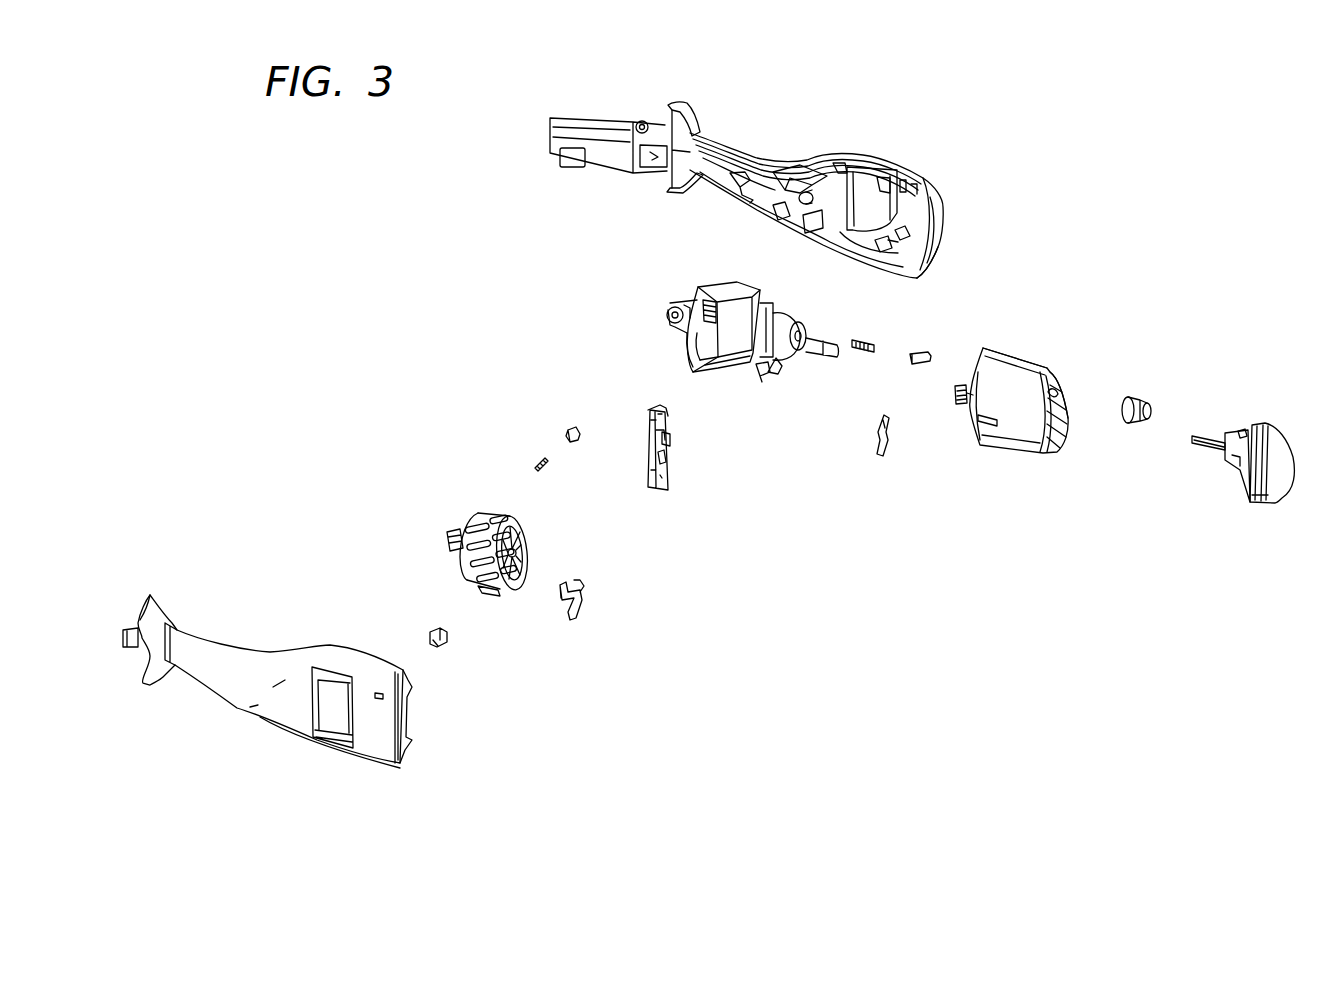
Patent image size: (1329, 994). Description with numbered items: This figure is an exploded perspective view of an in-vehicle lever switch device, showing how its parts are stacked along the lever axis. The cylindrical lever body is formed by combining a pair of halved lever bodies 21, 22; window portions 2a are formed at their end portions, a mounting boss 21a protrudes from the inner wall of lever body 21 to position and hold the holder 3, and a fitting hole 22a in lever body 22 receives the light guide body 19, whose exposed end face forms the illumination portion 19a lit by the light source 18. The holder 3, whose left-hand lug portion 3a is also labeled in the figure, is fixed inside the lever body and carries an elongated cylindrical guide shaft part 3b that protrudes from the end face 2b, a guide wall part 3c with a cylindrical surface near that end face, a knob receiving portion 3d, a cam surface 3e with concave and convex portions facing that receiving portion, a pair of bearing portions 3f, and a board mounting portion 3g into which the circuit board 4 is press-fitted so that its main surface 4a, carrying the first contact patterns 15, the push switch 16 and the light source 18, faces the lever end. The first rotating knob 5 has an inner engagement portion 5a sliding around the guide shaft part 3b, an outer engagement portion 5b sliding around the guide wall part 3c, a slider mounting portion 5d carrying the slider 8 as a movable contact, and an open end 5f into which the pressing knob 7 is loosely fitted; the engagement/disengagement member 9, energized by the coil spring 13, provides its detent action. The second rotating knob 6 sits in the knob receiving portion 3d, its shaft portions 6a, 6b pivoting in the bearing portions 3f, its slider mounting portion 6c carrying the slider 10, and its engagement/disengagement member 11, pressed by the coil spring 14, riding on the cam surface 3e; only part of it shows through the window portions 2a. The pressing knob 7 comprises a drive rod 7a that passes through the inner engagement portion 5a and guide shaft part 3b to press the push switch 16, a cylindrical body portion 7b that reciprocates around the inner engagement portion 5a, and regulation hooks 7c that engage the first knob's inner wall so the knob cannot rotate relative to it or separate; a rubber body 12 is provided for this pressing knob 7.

The halved lever body 21 is at (728, 142).
The mounting boss 21a is at (795, 162).
The window portion 2a is at (860, 178).
The end face 2b is at (932, 192).
The holder 3 is at (745, 283).
The motor mounting lug 3a is at (667, 312).
The guide shaft part 3b is at (826, 358).
The guide wall part 3c is at (782, 366).
The knob receiving portion 3d is at (730, 360).
The cam surface 3e is at (703, 300).
The bearing portion 3f is at (688, 335).
The board mounting portion 3g is at (760, 380).
The circuit board 4 is at (660, 488).
The main surface 4a is at (652, 436).
The first rotating knob 5 is at (1030, 456).
The inner engagement portion 5a is at (1054, 380).
The outer engagement portion 5b is at (977, 422).
The slider mounting portion 5d is at (958, 405).
The open end 5f is at (1058, 428).
The second rotating knob 6 is at (484, 512).
The shaft portion 6a is at (448, 534).
The shaft portion 6b is at (526, 552).
The slider mounting portion 6c is at (496, 592).
The pressing knob 7 is at (1286, 472).
The drive rod 7a is at (1200, 448).
The cylindrical body portion 7b is at (1232, 468).
The regulation hook 7c is at (1241, 429).
The slider 8 is at (878, 450).
The engagement/disengagement member 9 is at (922, 352).
The slider 10 is at (566, 622).
The engagement/disengagement member 11 is at (568, 430).
The rubber body 12 is at (1134, 397).
The coil spring 13 is at (866, 336).
The coil spring 14 is at (533, 462).
The first contact pattern 15 is at (658, 457).
The push switch 16 is at (672, 440).
The light source 18 is at (652, 410).
The light guide body 19 is at (437, 630).
The illumination portion 19a is at (440, 646).
The halved lever body 22 is at (228, 690).
The fitting hole 22a is at (379, 690).